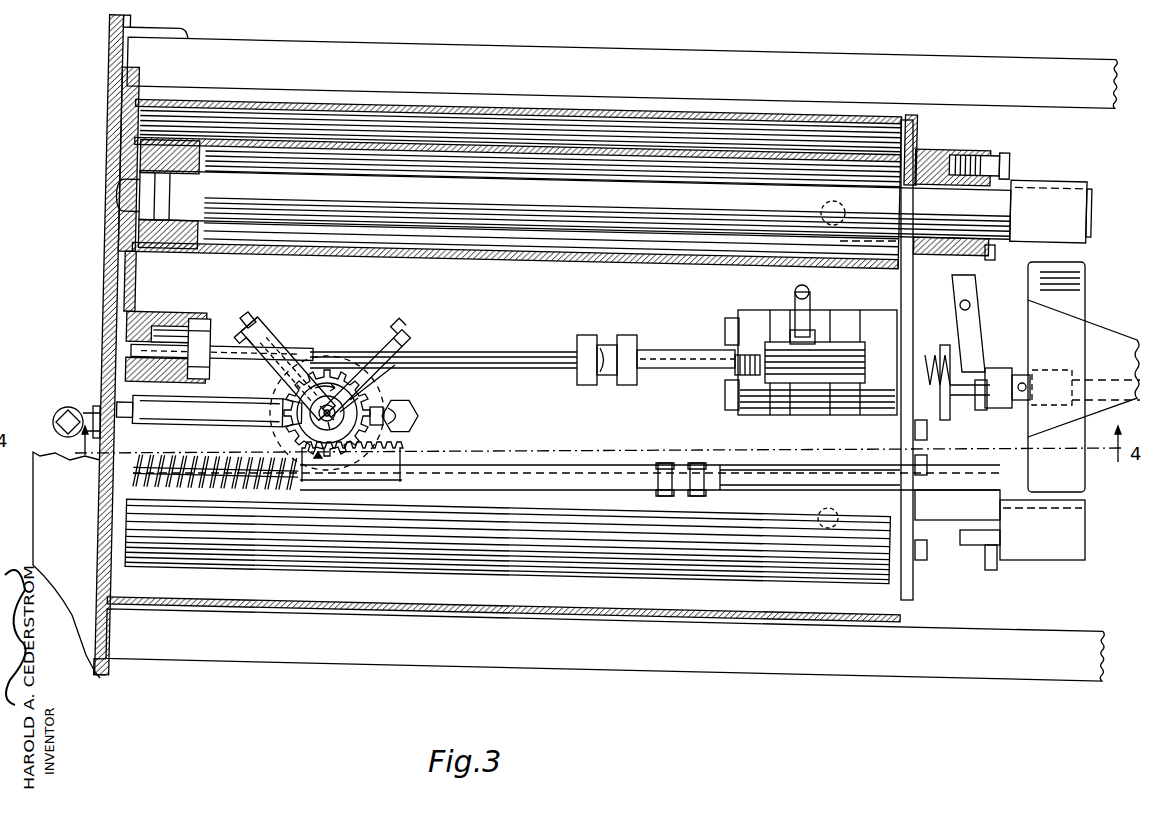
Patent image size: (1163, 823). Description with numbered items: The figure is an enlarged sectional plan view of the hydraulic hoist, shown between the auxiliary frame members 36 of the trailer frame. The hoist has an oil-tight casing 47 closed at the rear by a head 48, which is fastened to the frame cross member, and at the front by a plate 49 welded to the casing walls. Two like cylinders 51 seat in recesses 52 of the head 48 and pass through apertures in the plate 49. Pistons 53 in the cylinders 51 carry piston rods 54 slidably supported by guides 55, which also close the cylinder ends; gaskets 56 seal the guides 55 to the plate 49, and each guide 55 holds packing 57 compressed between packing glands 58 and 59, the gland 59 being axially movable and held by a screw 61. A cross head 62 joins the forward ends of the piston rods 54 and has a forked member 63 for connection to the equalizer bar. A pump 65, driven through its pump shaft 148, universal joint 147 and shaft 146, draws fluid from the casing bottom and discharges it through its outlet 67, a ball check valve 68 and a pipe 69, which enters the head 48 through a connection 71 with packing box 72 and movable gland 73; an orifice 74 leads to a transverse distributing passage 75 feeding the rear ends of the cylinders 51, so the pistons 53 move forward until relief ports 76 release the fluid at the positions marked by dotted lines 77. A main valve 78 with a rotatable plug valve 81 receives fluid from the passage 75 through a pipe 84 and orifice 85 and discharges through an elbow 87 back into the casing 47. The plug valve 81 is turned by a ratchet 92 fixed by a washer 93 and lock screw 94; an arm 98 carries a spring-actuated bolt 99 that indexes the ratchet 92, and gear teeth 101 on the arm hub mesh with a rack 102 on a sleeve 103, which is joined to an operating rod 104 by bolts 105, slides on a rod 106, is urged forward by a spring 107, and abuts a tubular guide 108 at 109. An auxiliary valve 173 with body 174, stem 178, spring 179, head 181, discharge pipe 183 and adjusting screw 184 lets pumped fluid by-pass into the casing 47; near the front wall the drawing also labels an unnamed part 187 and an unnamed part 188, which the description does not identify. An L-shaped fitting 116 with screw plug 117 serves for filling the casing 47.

The auxiliary frame members 36 is at (589, 53).
The casing 47 is at (415, 610).
The head 48 is at (120, 598).
The plate 49 is at (895, 606).
The cylinders 51 is at (520, 257).
The recesses 52 is at (122, 138).
The pistons 53 is at (200, 237).
The piston rods 54 is at (402, 224).
The guides 55 is at (968, 160).
The gaskets 56 is at (917, 128).
The packing 57 is at (947, 158).
The packing gland 58 is at (912, 241).
The packing gland 59 is at (982, 256).
The screw 61 is at (996, 165).
The cross head 62 is at (1078, 290).
The forked member 63 is at (1102, 340).
The pump 65 is at (758, 308).
The outlet 67 is at (666, 350).
The ball check valve 68 is at (605, 338).
The pipe 69 is at (540, 350).
The connection 71 is at (152, 322).
The packing box 72 is at (165, 330).
The movable gland 73 is at (200, 326).
The orifice 74 is at (128, 350).
The fluid distributing passage 75 is at (118, 255).
The relief ports 76 is at (822, 218).
The dotted lines 77 is at (838, 244).
The main valve 78 is at (318, 458).
The plug valve 81 is at (308, 410).
The pipe 84 is at (238, 404).
The orifice 85 is at (118, 412).
The elbow 87 is at (410, 410).
The ratchet 92 is at (326, 372).
The washer 93 is at (305, 420).
The lock screw 94 is at (330, 422).
The arm 98 is at (318, 335).
The spring-actuated bolt 99 is at (247, 320).
The gear teeth 101 is at (382, 393).
The rack 102 is at (410, 446).
The sleeve 103 is at (496, 466).
The operating rod 104 is at (585, 480).
The bolts 105 is at (695, 462).
The rod 106 is at (155, 488).
The spring 107 is at (238, 481).
The tubular guide 108 is at (784, 472).
The abutment 109 is at (722, 468).
The L-shaped fitting 116 is at (67, 408).
The screw plug 117 is at (58, 414).
The shaft 146 is at (1140, 398).
The universal joint 147 is at (1000, 368).
The pump shaft 148 is at (985, 398).
The auxiliary valve 173 is at (820, 392).
The valve body 174 is at (822, 342).
The stem 178 is at (940, 355).
The spring 179 is at (947, 398).
The head 181 is at (962, 388).
The discharge pipe 183 is at (812, 290).
The adjusting screw 184 is at (735, 375).
The lever 187 is at (978, 330).
The pivot hole 188 is at (970, 306).